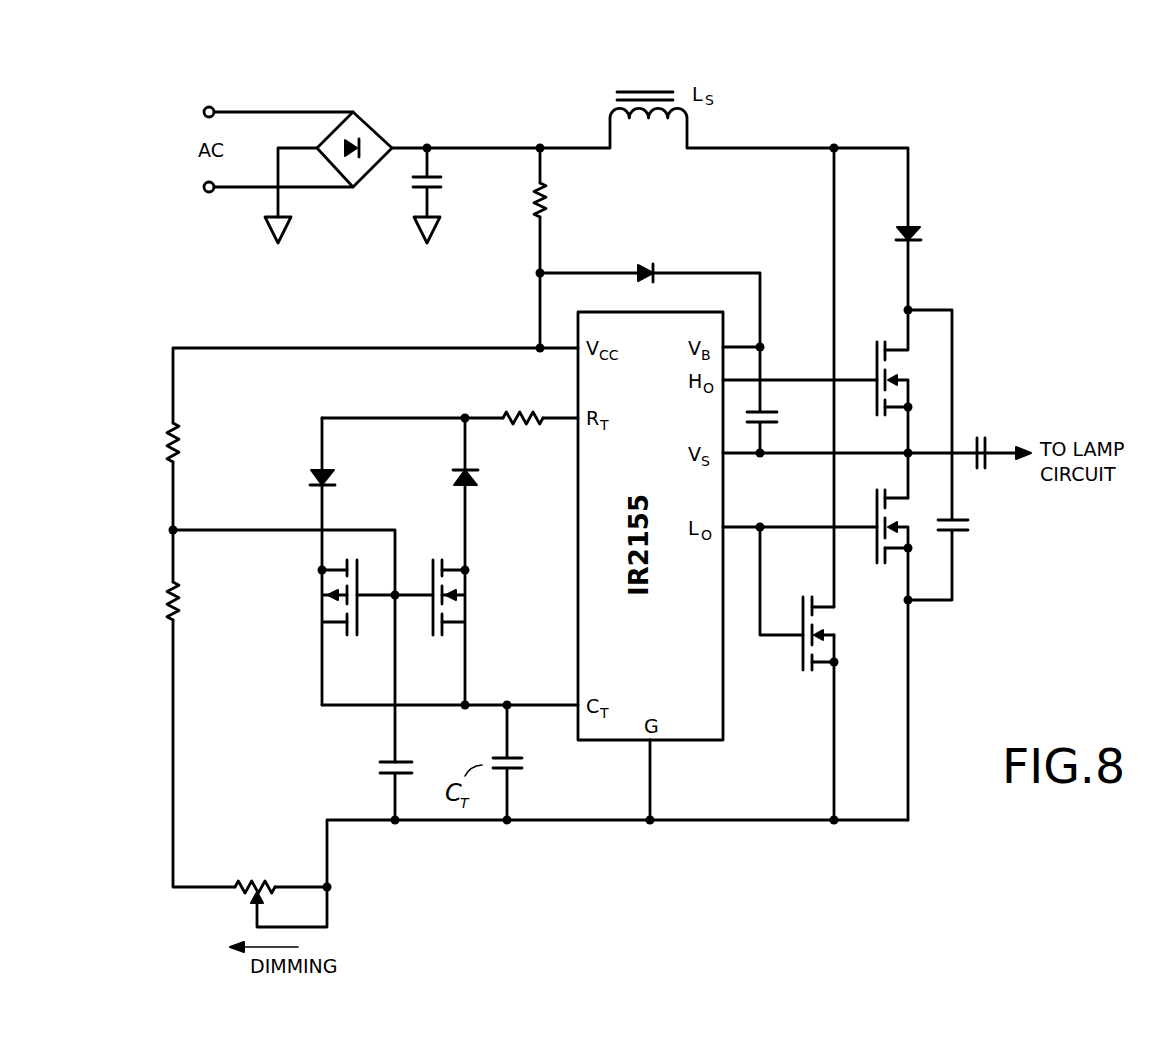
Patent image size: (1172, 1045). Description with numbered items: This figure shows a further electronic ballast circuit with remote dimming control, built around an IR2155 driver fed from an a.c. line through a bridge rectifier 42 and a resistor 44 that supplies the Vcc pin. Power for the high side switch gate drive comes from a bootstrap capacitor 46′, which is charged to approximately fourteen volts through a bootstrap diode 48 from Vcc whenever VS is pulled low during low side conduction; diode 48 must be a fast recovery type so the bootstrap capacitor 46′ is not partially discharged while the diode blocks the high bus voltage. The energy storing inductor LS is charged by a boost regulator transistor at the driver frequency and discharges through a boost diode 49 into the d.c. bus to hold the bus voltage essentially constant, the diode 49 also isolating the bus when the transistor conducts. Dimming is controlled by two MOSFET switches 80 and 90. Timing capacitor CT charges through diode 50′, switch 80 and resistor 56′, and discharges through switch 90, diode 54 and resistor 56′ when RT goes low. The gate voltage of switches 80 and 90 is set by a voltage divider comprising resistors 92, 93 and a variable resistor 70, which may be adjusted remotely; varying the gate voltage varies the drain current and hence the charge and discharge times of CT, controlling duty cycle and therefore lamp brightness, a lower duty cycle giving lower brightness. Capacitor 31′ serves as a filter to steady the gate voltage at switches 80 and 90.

The bridge rectifier 42 is at (360, 121).
The resistor 44 is at (547, 206).
The bootstrap diode 48 is at (673, 237).
The boost diode 49 is at (920, 234).
The bootstrap capacitor 46′ is at (773, 428).
The resistor 56′ is at (531, 402).
The diode 50′ is at (313, 476).
The diode 54 is at (453, 478).
The MOSFET switch 80 is at (313, 591).
The MOSFET switch 90 is at (480, 588).
The resistor 92 is at (162, 436).
The resistor 93 is at (160, 596).
The capacitor 31′ is at (372, 764).
The variable resistor 70 is at (267, 856).